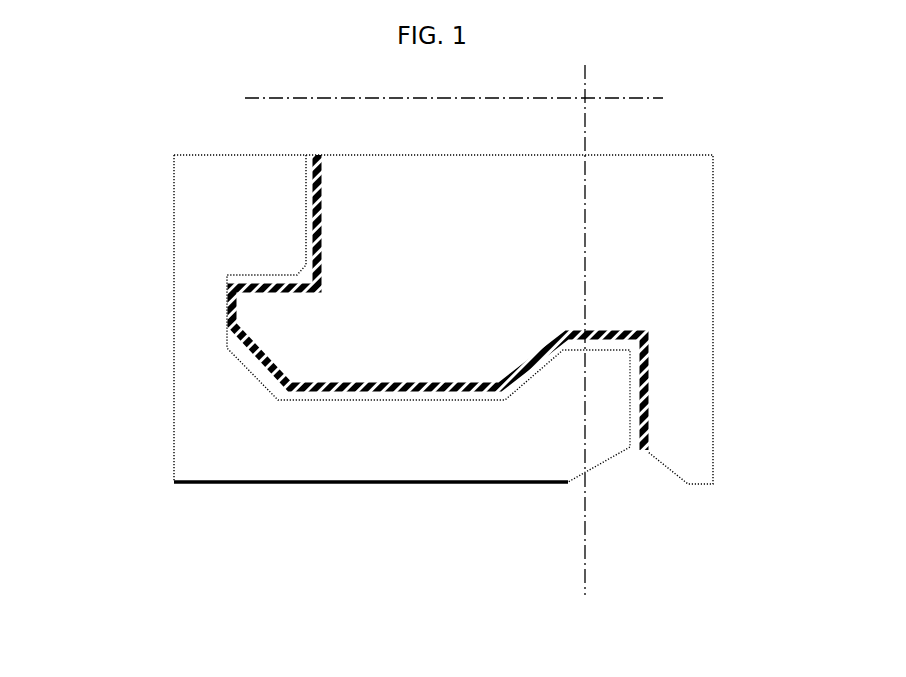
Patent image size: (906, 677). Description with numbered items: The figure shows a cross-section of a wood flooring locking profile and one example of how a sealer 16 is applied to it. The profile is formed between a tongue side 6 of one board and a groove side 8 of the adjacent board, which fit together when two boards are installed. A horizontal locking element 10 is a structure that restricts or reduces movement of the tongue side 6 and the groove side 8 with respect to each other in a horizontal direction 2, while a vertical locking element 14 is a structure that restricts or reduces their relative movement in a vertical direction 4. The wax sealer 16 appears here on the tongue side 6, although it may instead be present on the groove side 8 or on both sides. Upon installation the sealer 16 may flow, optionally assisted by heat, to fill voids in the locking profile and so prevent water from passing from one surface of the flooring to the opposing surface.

The horizontal direction 2 is at (636, 92).
The vertical direction 4 is at (585, 138).
The tongue side 6 is at (642, 268).
The groove side 8 is at (210, 398).
The horizontal locking element 10 is at (530, 355).
The vertical locking element 14 is at (372, 377).
The sealer 16 is at (650, 455).